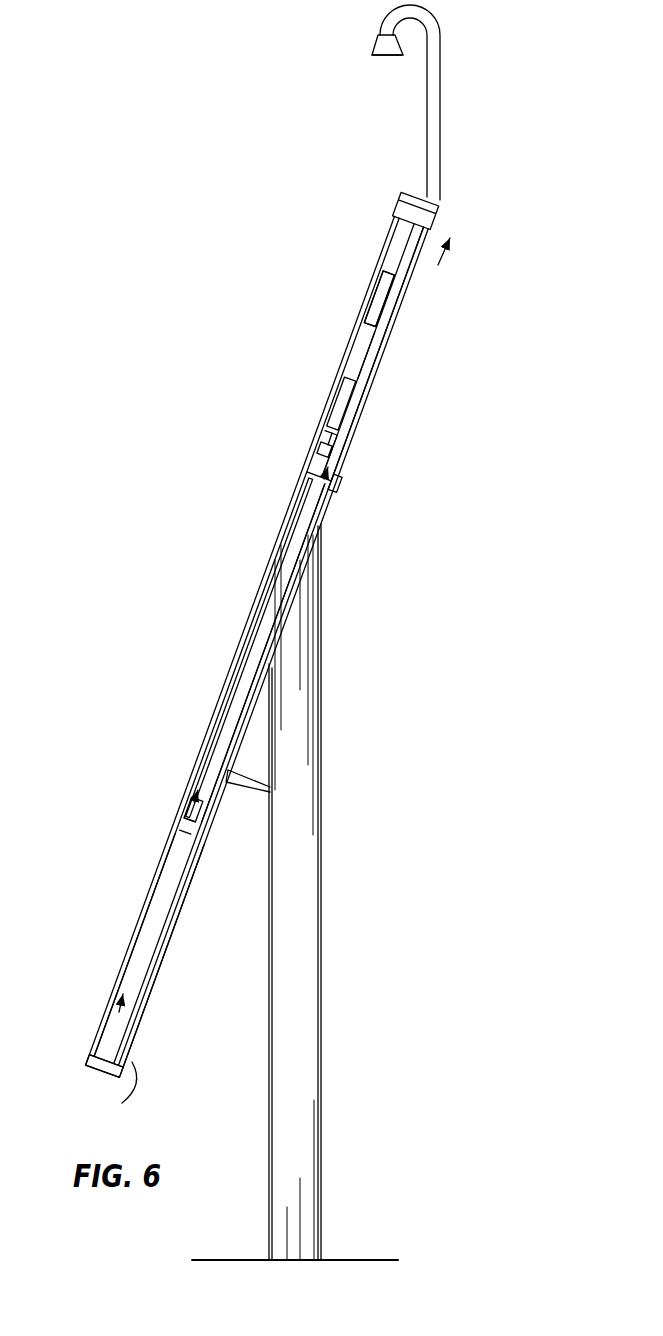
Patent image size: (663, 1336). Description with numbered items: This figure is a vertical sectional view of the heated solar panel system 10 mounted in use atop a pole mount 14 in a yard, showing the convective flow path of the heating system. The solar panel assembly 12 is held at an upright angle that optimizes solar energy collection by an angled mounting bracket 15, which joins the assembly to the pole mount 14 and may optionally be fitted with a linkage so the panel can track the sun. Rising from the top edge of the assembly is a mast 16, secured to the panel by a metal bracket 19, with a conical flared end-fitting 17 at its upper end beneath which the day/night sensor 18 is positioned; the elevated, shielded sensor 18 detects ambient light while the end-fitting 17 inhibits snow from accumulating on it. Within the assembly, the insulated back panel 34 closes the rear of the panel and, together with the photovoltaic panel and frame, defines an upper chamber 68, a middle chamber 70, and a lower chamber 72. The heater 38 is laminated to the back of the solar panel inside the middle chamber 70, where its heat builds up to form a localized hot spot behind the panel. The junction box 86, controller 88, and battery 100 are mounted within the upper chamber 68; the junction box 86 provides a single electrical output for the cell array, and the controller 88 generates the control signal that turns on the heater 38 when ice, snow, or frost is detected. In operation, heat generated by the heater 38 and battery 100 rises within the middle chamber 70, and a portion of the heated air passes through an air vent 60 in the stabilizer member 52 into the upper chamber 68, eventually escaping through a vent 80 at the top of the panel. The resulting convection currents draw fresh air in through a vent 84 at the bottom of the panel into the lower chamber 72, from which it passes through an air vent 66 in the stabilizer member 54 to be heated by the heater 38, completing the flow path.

The heated solar panel system 10 is at (116, 219).
The solar panel assembly 12 is at (385, 222).
The pole mount 14 is at (300, 1015).
The angled mounting bracket 15 is at (243, 753).
The mast 16 is at (428, 8).
The flared end-fitting 17 is at (377, 38).
The day/night sensor 18 is at (388, 58).
The metal bracket 19 is at (418, 192).
The insulated back panel 34 is at (160, 955).
The heater 38 is at (243, 693).
The stabilizer member 52 is at (307, 467).
The stabilizer member 54 is at (186, 800).
The air vent 60 is at (331, 490).
The air vent 66 is at (186, 830).
The upper chamber 68 is at (372, 339).
The middle chamber 70 is at (283, 593).
The lower chamber 72 is at (151, 918).
The vent 80 is at (414, 258).
The vent 84 is at (127, 1046).
The junction box 86 is at (377, 293).
The controller 88 is at (377, 293).
The battery 100 is at (342, 400).